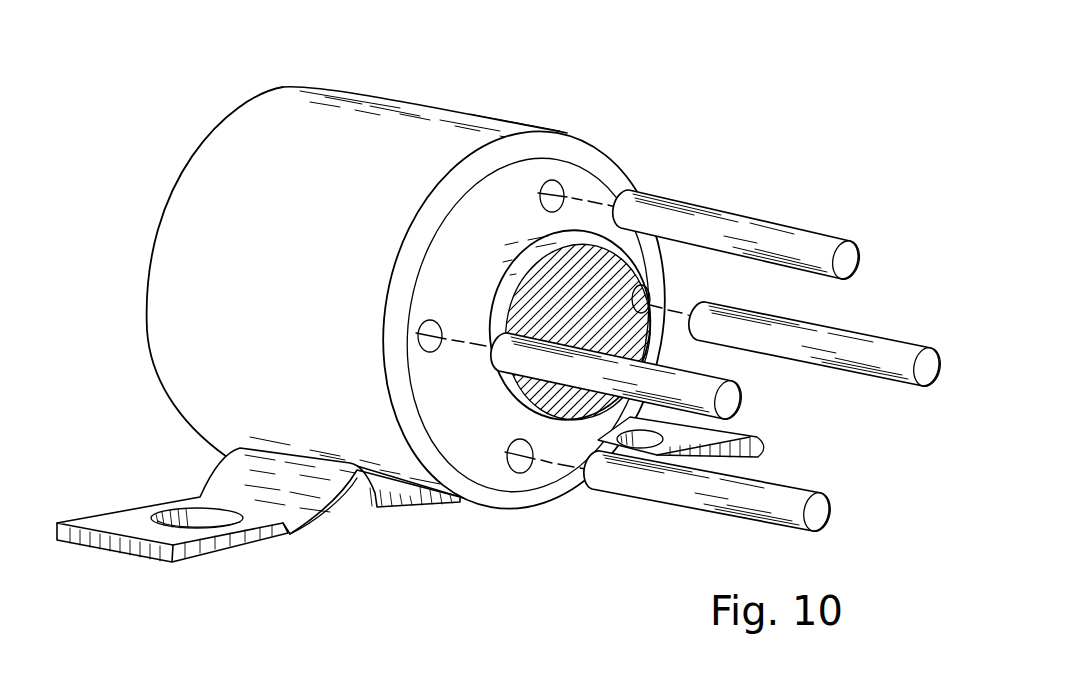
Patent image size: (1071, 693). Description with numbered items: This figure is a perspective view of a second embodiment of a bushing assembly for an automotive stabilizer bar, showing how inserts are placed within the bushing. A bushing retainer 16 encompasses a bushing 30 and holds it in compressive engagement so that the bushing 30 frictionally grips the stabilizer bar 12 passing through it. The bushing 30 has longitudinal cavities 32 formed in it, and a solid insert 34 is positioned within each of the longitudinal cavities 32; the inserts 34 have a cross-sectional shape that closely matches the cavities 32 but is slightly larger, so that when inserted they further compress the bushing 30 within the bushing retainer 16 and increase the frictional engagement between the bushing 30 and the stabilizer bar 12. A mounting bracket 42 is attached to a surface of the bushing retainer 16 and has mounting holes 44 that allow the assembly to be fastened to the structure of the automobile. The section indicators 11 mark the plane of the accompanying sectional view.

The section line 11- 11 is at (400, 104).
The stabilizer bar 12 is at (540, 300).
The bushing retainer 16 is at (188, 323).
The bushing 30 is at (543, 171).
The longitudinal cavities 32 is at (565, 186).
The solid insert 34 is at (773, 237).
The mounting bracket 42 is at (747, 428).
The mounting holes 44 is at (270, 523).